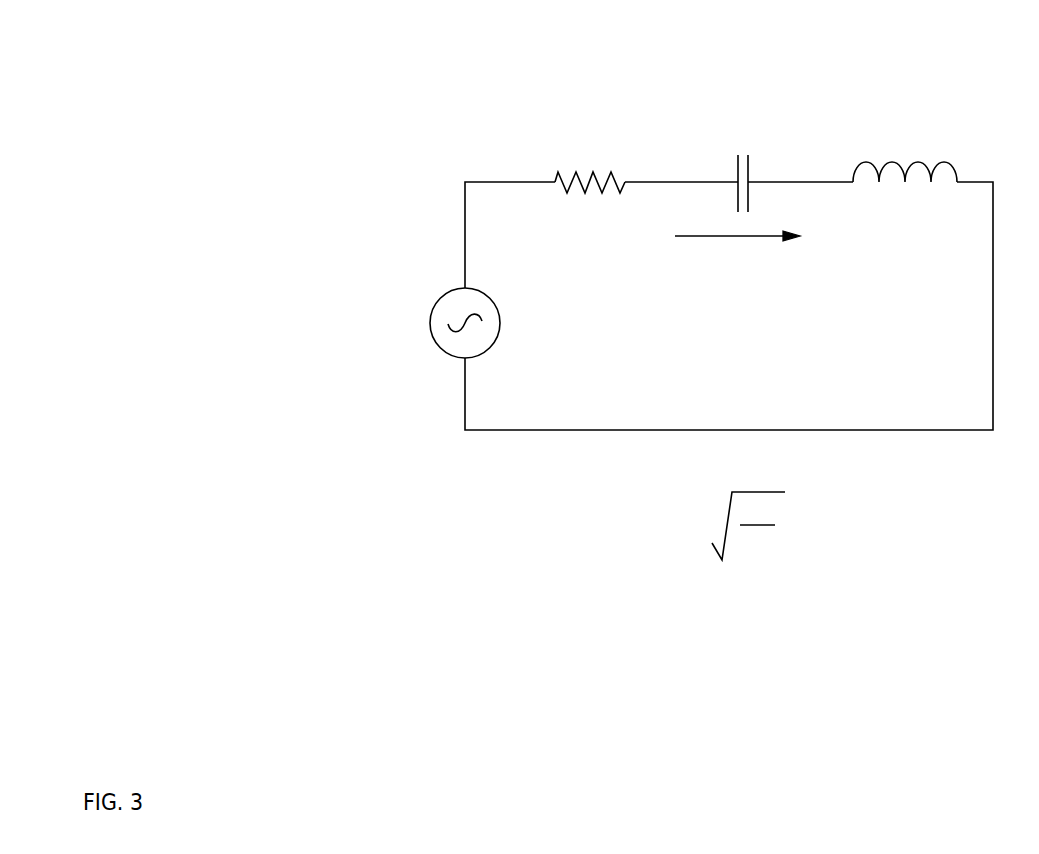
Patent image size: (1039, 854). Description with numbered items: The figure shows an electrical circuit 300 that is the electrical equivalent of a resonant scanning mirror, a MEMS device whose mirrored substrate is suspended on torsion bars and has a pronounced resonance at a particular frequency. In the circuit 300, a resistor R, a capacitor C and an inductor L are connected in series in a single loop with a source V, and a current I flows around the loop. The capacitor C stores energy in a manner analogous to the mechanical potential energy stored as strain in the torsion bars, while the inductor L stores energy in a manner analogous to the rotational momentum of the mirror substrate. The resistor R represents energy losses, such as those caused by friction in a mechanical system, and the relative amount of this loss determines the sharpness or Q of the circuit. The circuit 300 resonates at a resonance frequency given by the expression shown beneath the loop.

The electrical circuit 300 is at (478, 72).
The resistor R is at (590, 157).
The capacitor C is at (742, 167).
The inductor L is at (905, 152).
The AC voltage source V is at (452, 323).
The circuit current I is at (738, 243).